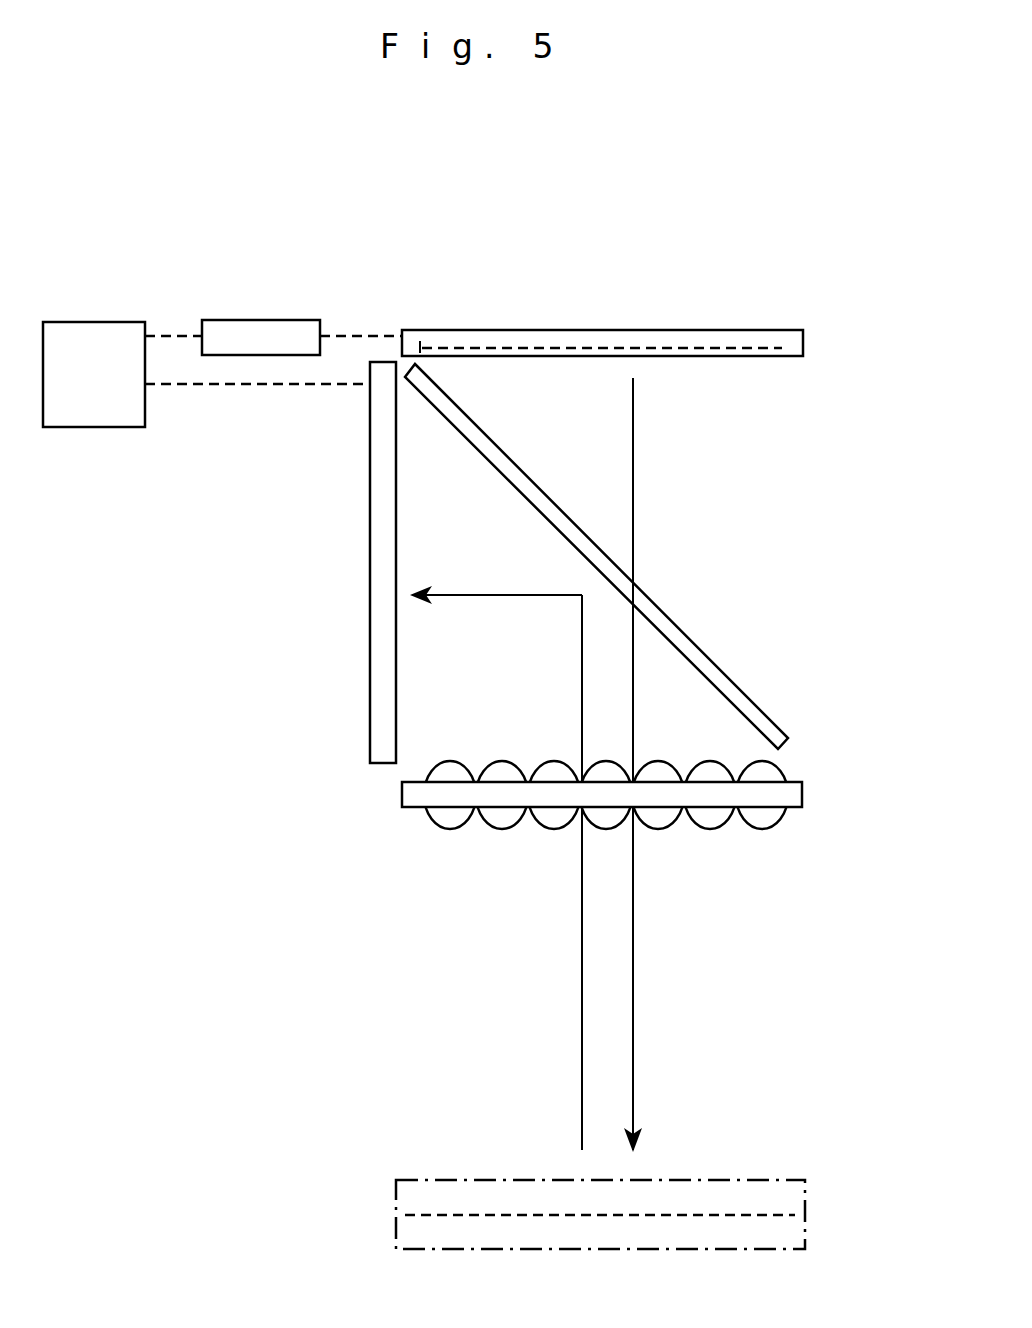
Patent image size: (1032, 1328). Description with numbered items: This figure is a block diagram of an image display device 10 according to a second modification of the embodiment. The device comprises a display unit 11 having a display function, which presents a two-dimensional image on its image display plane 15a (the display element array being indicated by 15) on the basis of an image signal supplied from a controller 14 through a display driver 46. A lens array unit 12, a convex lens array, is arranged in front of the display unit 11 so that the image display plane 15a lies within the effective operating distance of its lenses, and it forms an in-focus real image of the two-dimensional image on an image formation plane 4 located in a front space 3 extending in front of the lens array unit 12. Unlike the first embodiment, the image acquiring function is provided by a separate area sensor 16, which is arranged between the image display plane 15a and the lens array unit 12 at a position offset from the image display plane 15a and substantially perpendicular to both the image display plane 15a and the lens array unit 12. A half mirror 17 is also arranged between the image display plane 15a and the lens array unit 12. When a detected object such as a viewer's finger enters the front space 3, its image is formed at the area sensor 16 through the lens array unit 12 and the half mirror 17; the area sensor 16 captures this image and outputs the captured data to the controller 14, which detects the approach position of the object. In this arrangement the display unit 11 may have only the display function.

The front space 3 is at (806, 1198).
The image formation plane 4 is at (437, 1210).
The image display device 10 is at (480, 284).
The display unit 11 is at (803, 345).
The lens array unit 12 is at (803, 793).
The controller 14 is at (102, 428).
The light emitting element array 15 is at (675, 342).
The image display plane 15a is at (722, 358).
The area sensor 16 is at (382, 728).
The half mirror 17 is at (755, 715).
The display driver 46 is at (255, 320).